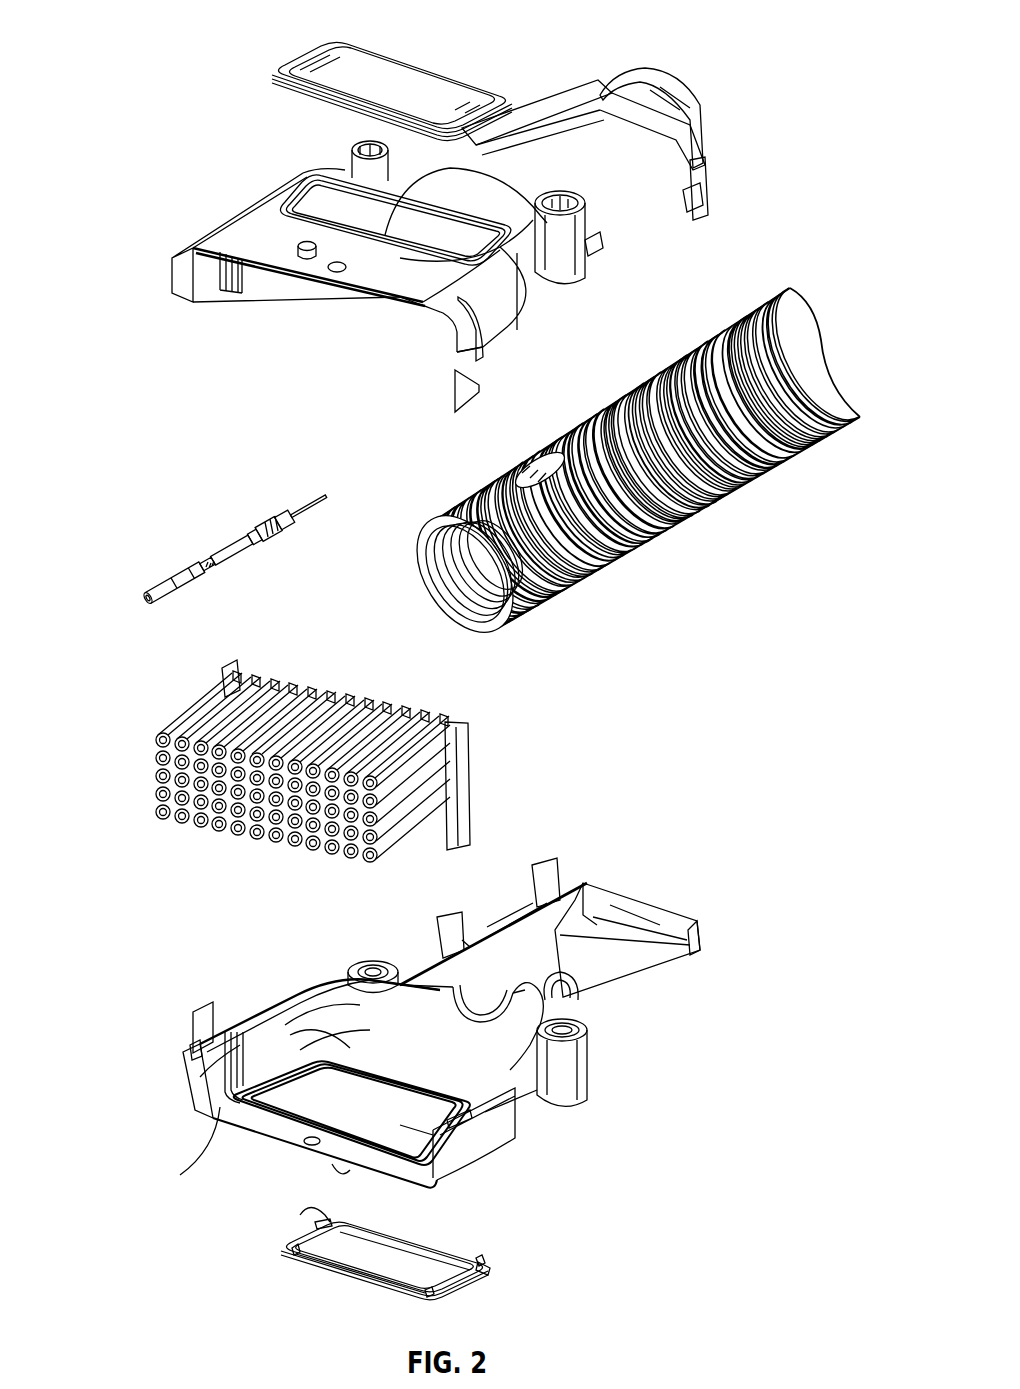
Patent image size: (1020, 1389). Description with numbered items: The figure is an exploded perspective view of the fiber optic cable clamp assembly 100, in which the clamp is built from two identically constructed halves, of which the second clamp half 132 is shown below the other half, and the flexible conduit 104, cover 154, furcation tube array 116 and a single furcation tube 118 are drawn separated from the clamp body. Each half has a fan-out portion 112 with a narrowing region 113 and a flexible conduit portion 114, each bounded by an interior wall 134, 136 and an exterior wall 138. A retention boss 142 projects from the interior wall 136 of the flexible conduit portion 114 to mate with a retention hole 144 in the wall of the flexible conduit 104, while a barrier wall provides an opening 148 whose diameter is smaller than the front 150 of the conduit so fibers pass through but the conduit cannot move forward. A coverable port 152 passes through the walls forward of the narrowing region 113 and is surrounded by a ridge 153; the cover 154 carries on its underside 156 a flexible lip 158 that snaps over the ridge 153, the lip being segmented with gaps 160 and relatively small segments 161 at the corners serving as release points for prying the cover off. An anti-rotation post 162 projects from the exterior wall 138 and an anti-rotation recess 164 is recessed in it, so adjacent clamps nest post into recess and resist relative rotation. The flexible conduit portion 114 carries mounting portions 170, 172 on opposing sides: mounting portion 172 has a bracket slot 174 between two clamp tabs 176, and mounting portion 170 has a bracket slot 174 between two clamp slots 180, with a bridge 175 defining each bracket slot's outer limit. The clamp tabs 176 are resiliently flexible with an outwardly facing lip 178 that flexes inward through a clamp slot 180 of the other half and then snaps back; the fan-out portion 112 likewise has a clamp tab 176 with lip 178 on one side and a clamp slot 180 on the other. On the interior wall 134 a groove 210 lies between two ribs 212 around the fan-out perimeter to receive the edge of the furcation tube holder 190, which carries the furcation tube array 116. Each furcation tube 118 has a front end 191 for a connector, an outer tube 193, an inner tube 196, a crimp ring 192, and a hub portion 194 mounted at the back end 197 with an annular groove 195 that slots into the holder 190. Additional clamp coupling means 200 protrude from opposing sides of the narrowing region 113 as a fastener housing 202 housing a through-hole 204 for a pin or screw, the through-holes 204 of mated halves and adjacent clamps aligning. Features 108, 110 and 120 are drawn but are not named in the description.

The fiber optic cable clamp assembly 100 is at (220, 38).
The flexible conduit 104 is at (663, 487).
The upper housing 108 is at (435, 370).
The latch end 110 is at (655, 82).
The fan-out portion 112 is at (508, 318).
The narrowing region 113 is at (455, 178).
The flexible conduit portion 114 is at (660, 85).
The furcation tube array 116 is at (252, 873).
The furcation tube 118 is at (150, 515).
The end wall 120 is at (172, 270).
The second clamp half 132 is at (227, 235).
The interior wall 134 is at (278, 1040).
The interior wall 136 is at (583, 895).
The exterior wall 138 is at (255, 215).
The retention boss 142 is at (528, 998).
The retention hole 144 is at (545, 460).
The opening 148 is at (463, 1018).
The front 150 is at (415, 550).
The coverable port 152 is at (316, 200).
The ridge 153 is at (440, 185).
The cover 154 is at (328, 68).
The underside 156 is at (365, 1253).
The lip 158 is at (405, 1278).
The gaps 160 is at (300, 1222).
The relatively small segments 161 is at (478, 1258).
The anti-rotation post 162 is at (300, 243).
The anti-rotation recess 164 is at (337, 272).
The mounting portion 170 is at (510, 112).
The mounting portion 172 is at (515, 895).
The bracket slot 174 is at (593, 110).
The bridge 175 is at (640, 200).
The clamp tabs 176 is at (705, 170).
The outwardly facing lip 178 is at (700, 205).
The clamp slots 180 is at (655, 905).
The furcation tube holder 190 is at (468, 780).
The front end 191 is at (138, 602).
The crimp ring 192 is at (178, 605).
The outer tube 193 is at (170, 590).
The hub portion 194 is at (262, 503).
The annular groove 195 is at (300, 505).
The inner tube 196 is at (220, 555).
The back end 197 is at (208, 563).
The clamp coupling means 200 is at (578, 295).
The fastener housing 202 is at (385, 160).
The through-hole 204 is at (360, 145).
The groove 210 is at (232, 297).
The ribs 212 is at (243, 280).